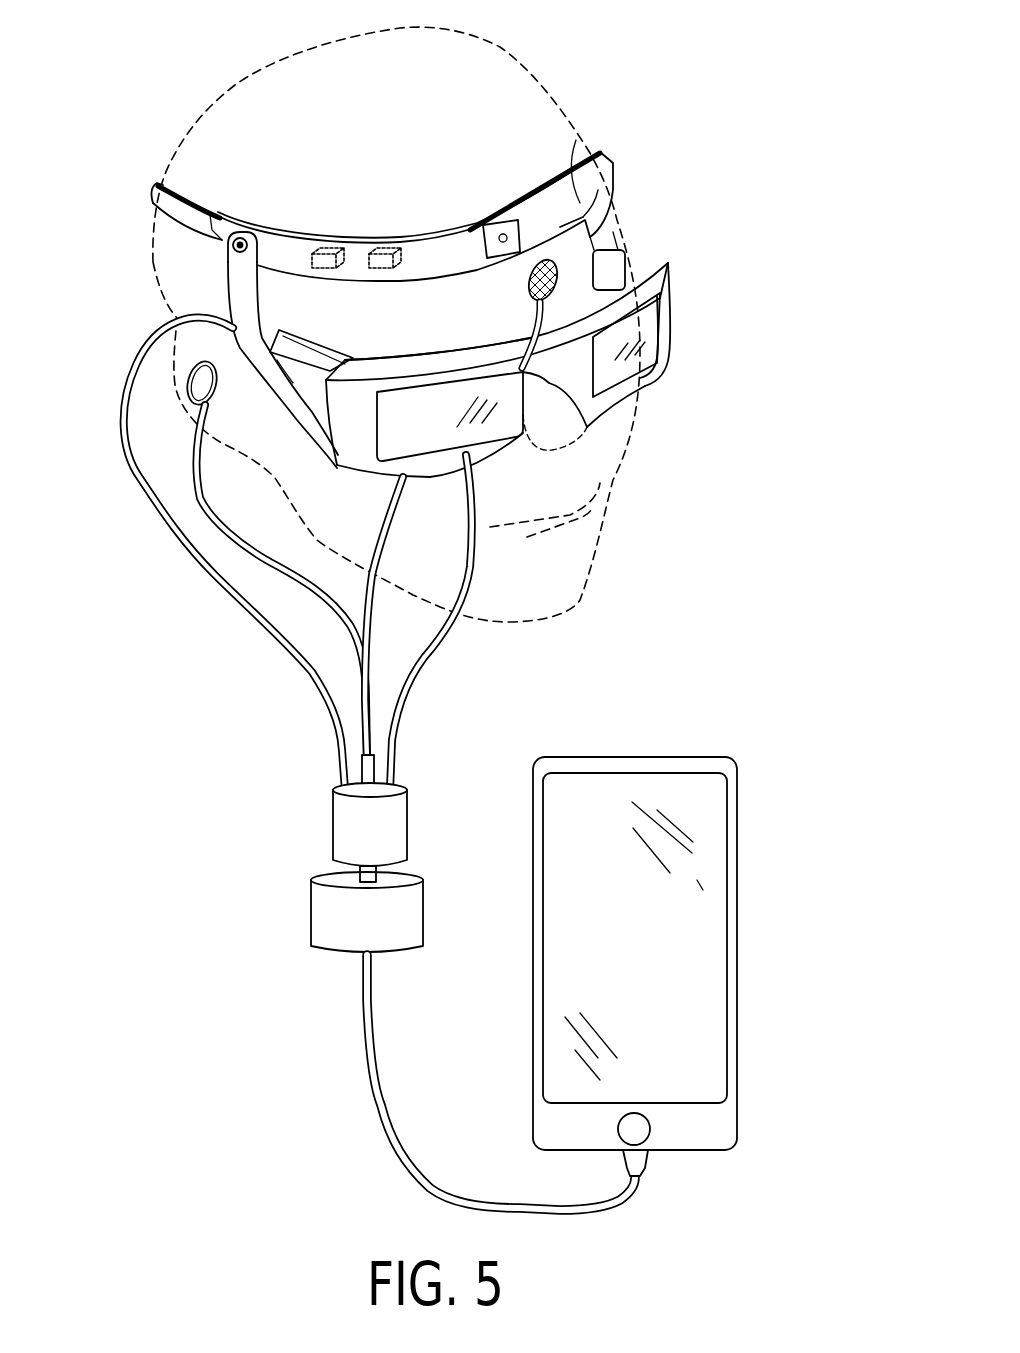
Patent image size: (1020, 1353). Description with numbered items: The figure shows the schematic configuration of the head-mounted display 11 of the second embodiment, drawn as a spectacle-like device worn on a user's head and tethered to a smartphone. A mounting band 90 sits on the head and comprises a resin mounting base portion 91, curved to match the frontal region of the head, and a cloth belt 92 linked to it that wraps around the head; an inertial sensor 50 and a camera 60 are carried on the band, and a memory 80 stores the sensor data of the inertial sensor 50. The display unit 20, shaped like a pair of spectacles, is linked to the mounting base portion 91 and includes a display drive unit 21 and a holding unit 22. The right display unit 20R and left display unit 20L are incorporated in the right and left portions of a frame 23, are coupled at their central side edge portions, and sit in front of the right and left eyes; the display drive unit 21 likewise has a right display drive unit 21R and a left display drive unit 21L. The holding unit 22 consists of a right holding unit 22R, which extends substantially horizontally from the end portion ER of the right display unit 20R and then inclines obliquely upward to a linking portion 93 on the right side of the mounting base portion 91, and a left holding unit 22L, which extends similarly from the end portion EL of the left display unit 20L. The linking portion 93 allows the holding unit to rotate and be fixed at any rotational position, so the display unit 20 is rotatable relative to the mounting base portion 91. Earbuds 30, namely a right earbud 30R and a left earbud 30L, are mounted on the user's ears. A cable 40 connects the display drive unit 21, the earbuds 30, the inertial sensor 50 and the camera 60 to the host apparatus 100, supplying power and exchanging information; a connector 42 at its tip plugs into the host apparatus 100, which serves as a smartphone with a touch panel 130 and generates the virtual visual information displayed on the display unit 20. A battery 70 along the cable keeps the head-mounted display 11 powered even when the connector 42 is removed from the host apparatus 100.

The head-mounted display 11 is at (750, 68).
The display unit 20 is at (730, 373).
The left display unit 20L is at (650, 357).
The right display unit 20R is at (503, 413).
The display drive unit 21 is at (378, 107).
The left display drive unit 21L is at (588, 235).
The right display drive unit 21R is at (313, 343).
The holding unit 22 is at (180, 3).
The left holding unit 22L is at (585, 235).
The right holding unit 22R is at (254, 230).
The frame 23 is at (415, 373).
The earbuds 30 is at (153, 600).
The left earbud 30L is at (530, 345).
The right earbud 30R is at (190, 383).
The cable 40 is at (433, 770).
The connector 42 is at (648, 1158).
The inertial sensor 50 is at (390, 248).
The camera 60 is at (501, 234).
The battery 70 is at (322, 873).
The memory 80 is at (343, 270).
The mounting band 90 is at (617, 157).
The mounting base portion 91 is at (577, 140).
The belt 92 is at (172, 177).
The linking portion 93 is at (232, 245).
The host apparatus 100 is at (720, 740).
The touch panel 130 is at (700, 807).
The end portion of the left display unit EL is at (670, 317).
The end portion of the right display unit ER is at (340, 427).